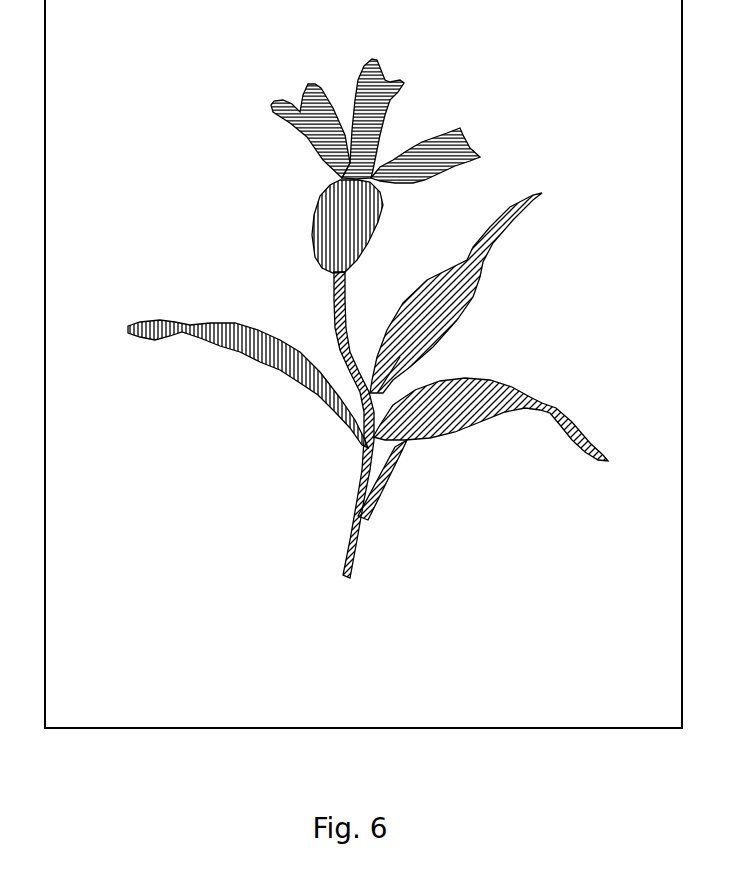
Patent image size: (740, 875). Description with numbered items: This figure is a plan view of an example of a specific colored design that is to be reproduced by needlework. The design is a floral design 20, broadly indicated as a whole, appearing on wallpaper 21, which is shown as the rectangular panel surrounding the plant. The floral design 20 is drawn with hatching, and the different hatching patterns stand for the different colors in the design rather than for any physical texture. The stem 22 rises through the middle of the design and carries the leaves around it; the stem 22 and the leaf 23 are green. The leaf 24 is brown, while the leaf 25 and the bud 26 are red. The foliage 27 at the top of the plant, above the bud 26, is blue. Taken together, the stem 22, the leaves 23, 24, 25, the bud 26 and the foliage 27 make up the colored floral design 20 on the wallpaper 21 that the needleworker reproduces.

The floral design 20 is at (317, 390).
The wallpaper 21 is at (130, 685).
The stem 22 is at (333, 328).
The leaf 23 is at (463, 323).
The leaf 24 is at (482, 418).
The leaf 25 is at (233, 355).
The bud 26 is at (323, 220).
The foliage 27 is at (297, 142).